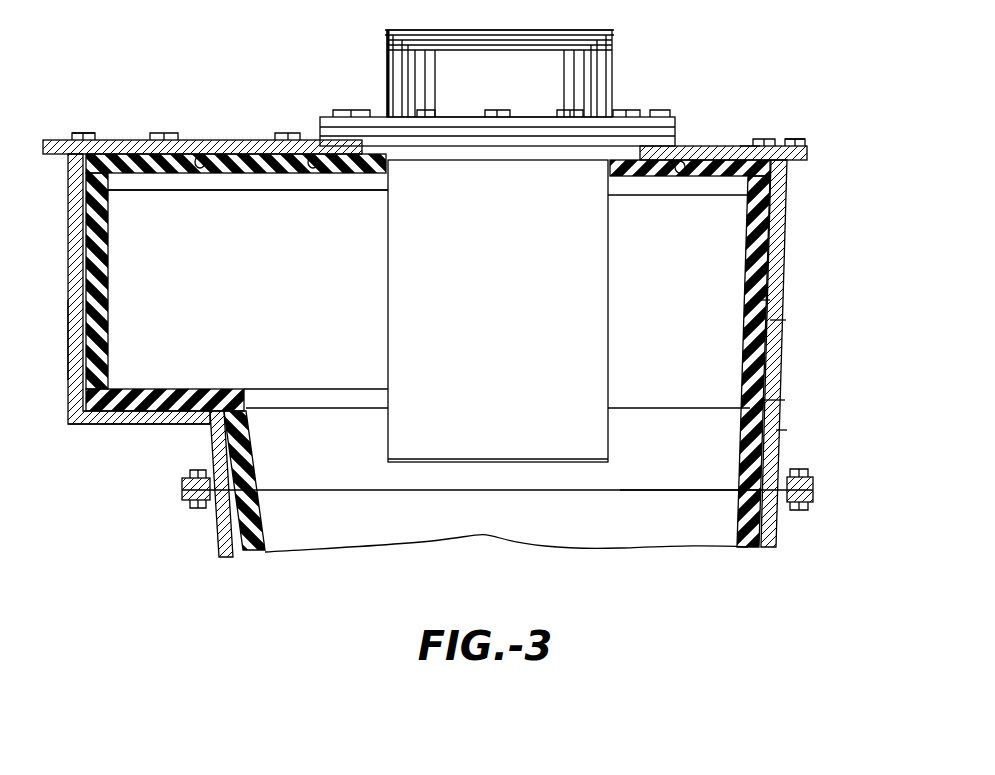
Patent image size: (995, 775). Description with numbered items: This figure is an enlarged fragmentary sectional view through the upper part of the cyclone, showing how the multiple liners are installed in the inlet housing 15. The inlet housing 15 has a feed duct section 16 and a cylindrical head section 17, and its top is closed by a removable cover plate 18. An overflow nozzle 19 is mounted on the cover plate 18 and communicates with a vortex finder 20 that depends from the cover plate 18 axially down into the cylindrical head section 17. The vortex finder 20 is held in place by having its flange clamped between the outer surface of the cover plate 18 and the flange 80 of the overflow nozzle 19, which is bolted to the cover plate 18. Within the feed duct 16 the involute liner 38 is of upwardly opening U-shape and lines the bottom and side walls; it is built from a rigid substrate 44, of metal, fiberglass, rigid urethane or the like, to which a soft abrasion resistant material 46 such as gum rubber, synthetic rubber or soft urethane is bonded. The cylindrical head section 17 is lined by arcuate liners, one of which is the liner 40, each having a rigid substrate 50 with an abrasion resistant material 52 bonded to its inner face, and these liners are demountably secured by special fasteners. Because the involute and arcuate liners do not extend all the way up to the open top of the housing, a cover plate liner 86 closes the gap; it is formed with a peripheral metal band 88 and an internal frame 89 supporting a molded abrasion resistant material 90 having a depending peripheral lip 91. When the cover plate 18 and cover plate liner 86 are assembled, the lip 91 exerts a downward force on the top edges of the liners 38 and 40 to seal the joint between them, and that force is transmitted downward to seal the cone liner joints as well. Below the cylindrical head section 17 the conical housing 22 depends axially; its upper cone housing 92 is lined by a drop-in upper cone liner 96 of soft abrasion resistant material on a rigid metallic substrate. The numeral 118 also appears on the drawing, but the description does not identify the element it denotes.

The inlet housing 15 is at (800, 436).
The feed duct section 16 is at (162, 418).
The cylindrical head section 17 is at (788, 243).
The cover plate 18 is at (750, 146).
The overflow nozzle 19 is at (388, 62).
The vortex finder 20 is at (621, 356).
The conical housing 22 is at (208, 530).
The involute liner 38 is at (116, 265).
The arcuate liner 40 is at (737, 304).
The rigid substrate 44 is at (95, 402).
The abrasion resistant material 46 is at (98, 343).
The rigid substrate 50 is at (776, 324).
The abrasion resistant material 52 is at (770, 353).
The flange of the overflow nozzle 80 is at (322, 117).
The cover plate liner 86 is at (364, 186).
The peripheral metal band 88 is at (79, 165).
The internal frame 89 is at (312, 165).
The molded abrasion resistant material 90 is at (248, 152).
The depending peripheral lip 91 is at (186, 182).
The upper cone housing 92 is at (780, 546).
The upper cone liner 96 is at (712, 530).
The wall segment 118 is at (778, 410).